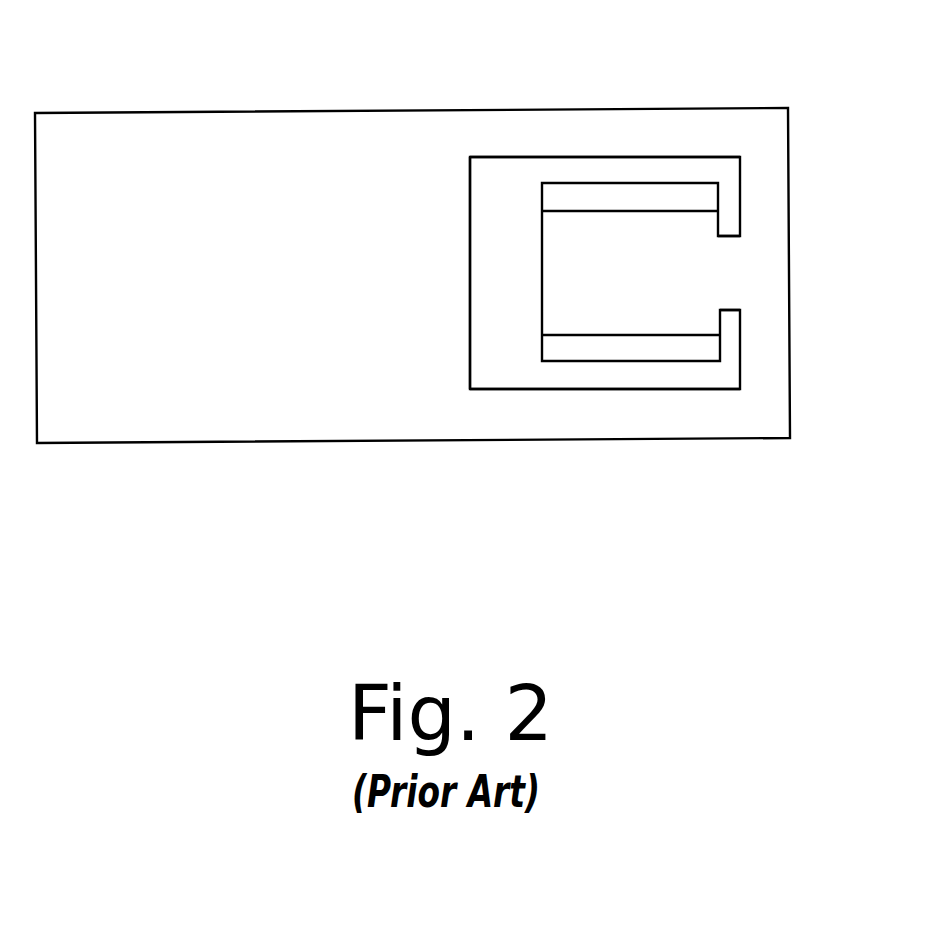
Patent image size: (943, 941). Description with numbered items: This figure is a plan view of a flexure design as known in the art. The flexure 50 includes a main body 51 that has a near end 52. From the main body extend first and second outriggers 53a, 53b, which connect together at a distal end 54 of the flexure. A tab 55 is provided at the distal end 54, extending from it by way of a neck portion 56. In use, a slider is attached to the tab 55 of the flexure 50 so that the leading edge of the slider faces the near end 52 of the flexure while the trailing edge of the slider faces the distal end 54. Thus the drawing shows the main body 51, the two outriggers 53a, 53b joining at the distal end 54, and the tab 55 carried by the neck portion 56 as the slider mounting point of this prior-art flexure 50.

The flexure 50 is at (124, 86).
The main body 51 is at (137, 184).
The near end 52 is at (440, 300).
The first outrigger 53a is at (557, 125).
The second outrigger 53b is at (555, 423).
The distal end 54 is at (776, 259).
The tab 55 is at (630, 285).
The neck portion 56 is at (730, 285).